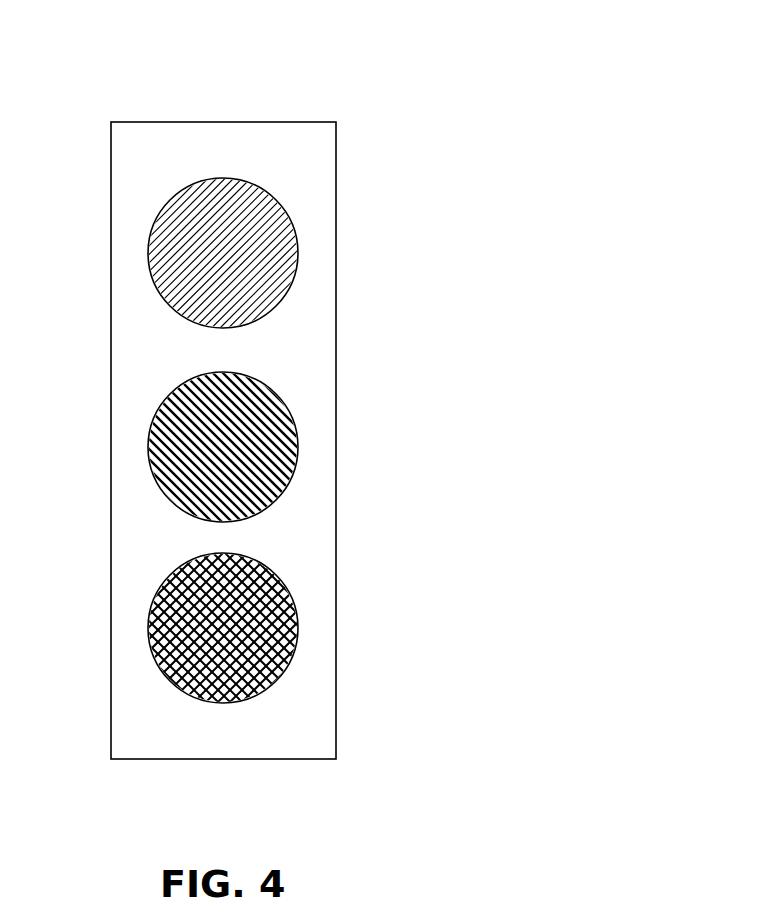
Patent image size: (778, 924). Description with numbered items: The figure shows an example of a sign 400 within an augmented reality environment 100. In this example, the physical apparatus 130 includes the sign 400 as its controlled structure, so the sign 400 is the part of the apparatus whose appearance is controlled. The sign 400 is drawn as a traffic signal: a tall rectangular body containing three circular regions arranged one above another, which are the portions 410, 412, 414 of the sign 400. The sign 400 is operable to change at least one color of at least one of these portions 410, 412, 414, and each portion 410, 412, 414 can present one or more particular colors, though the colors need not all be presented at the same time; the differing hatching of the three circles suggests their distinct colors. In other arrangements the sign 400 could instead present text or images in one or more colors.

The augmented reality environment 100 is at (242, 60).
The physical apparatus 130 is at (338, 105).
The sign 400 is at (111, 148).
The first portion of the sign 410 is at (298, 249).
The second portion of the sign 412 is at (298, 451).
The third portion of the sign 414 is at (298, 628).